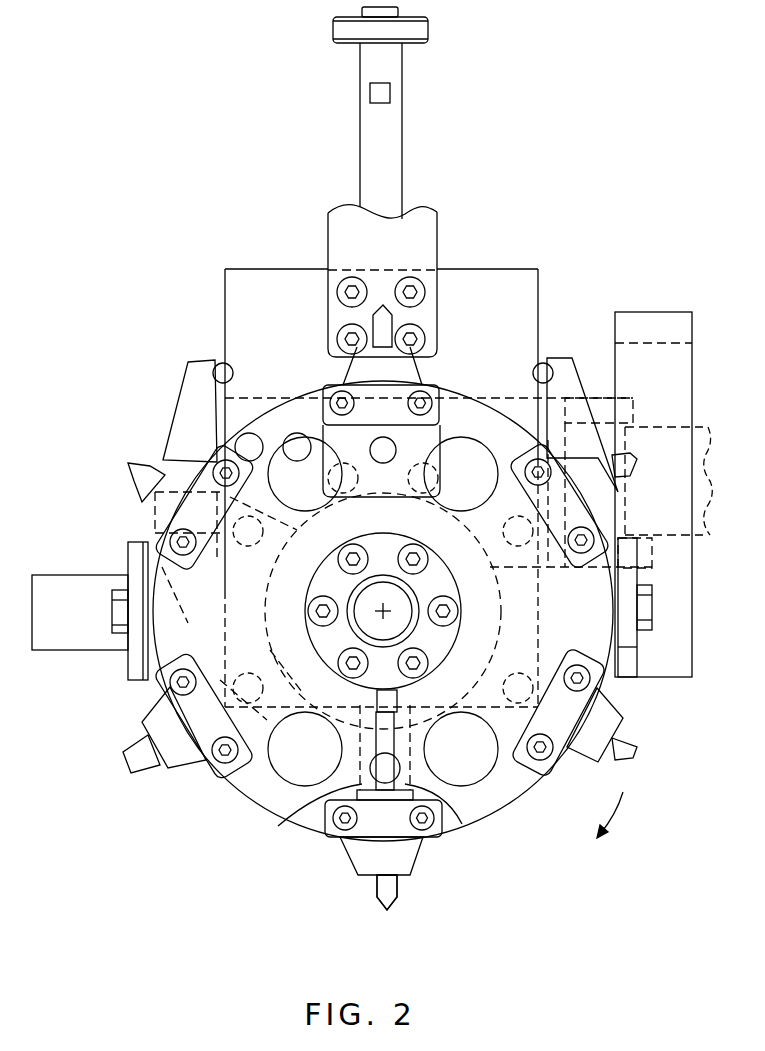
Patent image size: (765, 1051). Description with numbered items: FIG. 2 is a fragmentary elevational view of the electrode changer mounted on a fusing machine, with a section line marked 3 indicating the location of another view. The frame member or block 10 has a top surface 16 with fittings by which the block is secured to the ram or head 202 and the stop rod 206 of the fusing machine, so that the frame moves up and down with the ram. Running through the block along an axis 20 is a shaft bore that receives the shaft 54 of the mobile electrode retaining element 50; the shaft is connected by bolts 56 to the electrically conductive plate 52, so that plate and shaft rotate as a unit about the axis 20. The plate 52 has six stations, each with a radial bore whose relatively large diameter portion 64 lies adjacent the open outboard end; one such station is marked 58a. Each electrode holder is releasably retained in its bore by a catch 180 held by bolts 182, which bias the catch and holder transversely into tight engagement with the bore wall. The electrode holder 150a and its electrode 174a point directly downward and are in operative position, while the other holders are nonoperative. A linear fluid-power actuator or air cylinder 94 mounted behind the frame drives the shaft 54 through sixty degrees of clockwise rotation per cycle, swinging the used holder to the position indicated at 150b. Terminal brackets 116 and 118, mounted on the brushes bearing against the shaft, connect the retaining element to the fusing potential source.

The frame member or block 10 is at (429, 464).
The top surface 16 is at (460, 268).
The axis 20 is at (386, 606).
The mobile electrode retaining element 50 is at (257, 815).
The electrically conductive plate 52 is at (221, 783).
The shaft 54 is at (376, 614).
The bolts 56 is at (343, 556).
The bore or station 58a is at (459, 823).
The relatively large diameter portion 64 is at (303, 809).
The linear fluid-power actuator or air cylinder 94 is at (702, 542).
The terminal bracket 116 is at (107, 580).
The terminal bracket 118 is at (662, 660).
The electrode holder 150a is at (150, 507).
The electrode holder position 150b is at (174, 771).
The electrode 174a is at (377, 878).
The catch 180 is at (370, 832).
The bolts 182 is at (337, 828).
The ram or head 202 is at (328, 247).
The stop rod 206 is at (403, 181).
The section line 3- 3 is at (343, 563).